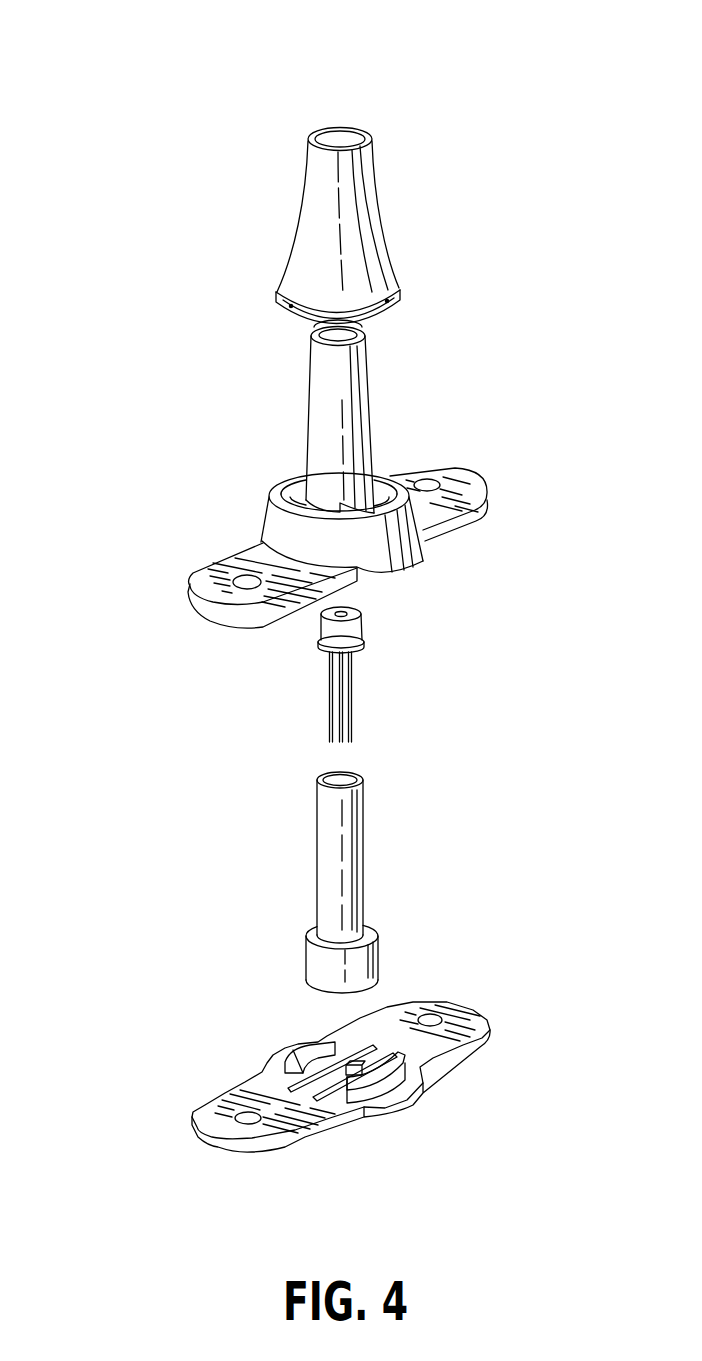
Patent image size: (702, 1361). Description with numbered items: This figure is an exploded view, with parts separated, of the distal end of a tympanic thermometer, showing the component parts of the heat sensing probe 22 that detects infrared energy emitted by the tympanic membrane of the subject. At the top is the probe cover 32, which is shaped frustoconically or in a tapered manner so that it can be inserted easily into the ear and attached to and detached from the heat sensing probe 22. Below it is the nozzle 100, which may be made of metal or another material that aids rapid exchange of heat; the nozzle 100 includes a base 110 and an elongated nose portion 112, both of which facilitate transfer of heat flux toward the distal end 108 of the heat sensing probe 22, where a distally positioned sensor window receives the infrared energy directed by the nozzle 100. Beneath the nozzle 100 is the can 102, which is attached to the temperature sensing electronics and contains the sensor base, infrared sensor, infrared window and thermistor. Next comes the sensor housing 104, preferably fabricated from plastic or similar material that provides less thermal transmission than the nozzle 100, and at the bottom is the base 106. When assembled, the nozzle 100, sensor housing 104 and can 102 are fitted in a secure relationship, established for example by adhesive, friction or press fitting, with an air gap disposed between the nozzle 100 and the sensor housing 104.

The heat sensing probe 22 is at (246, 884).
The probe cover 32 is at (340, 137).
The elongated nose portion 112 is at (372, 400).
The nozzle 100 is at (205, 612).
The base 110 is at (190, 590).
The distal end 108 is at (402, 672).
The can 102 is at (320, 630).
The sensor housing 104 is at (363, 905).
The base 106 is at (465, 1010).